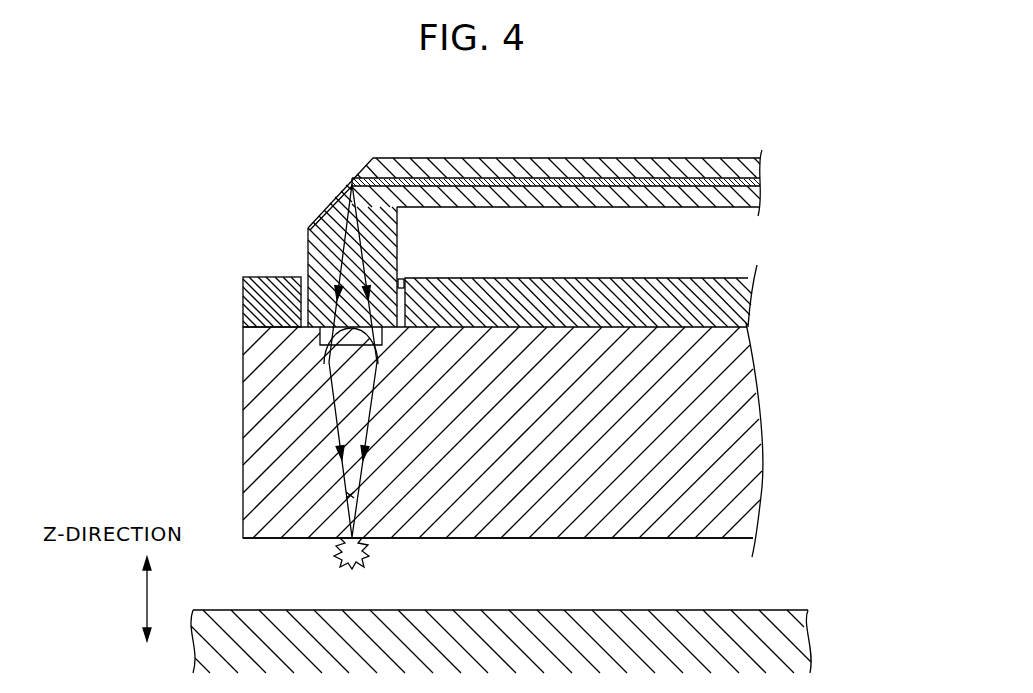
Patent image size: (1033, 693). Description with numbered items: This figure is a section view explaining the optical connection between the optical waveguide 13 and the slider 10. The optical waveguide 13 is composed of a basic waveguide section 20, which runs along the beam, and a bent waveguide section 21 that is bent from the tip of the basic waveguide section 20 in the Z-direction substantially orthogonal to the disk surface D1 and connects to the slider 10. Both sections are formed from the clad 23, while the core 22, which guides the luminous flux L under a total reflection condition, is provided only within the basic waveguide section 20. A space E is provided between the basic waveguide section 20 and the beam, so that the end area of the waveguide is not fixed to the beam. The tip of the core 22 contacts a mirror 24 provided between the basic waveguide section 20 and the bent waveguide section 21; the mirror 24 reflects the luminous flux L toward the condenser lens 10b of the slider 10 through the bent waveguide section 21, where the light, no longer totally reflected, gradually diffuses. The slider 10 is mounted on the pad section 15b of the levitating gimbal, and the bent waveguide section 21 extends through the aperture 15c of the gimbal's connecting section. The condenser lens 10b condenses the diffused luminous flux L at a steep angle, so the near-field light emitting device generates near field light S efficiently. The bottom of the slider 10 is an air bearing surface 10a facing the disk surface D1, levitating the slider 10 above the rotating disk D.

The optical waveguide 13 is at (382, 87).
The basic waveguide section 20 is at (396, 155).
The bent waveguide section 21 is at (302, 240).
The mirror 24 is at (312, 226).
The core 22 is at (700, 180).
The clad 23 is at (627, 170).
The space E is at (562, 235).
The pad section 15b is at (693, 287).
The aperture 15c is at (404, 280).
The slider 10 is at (257, 442).
The air bearing surface 10a is at (272, 540).
The condenser lens 10b is at (320, 330).
The luminous flux L is at (364, 257).
The near field light S is at (340, 562).
The disk D is at (797, 638).
The disk surface D1 is at (797, 610).